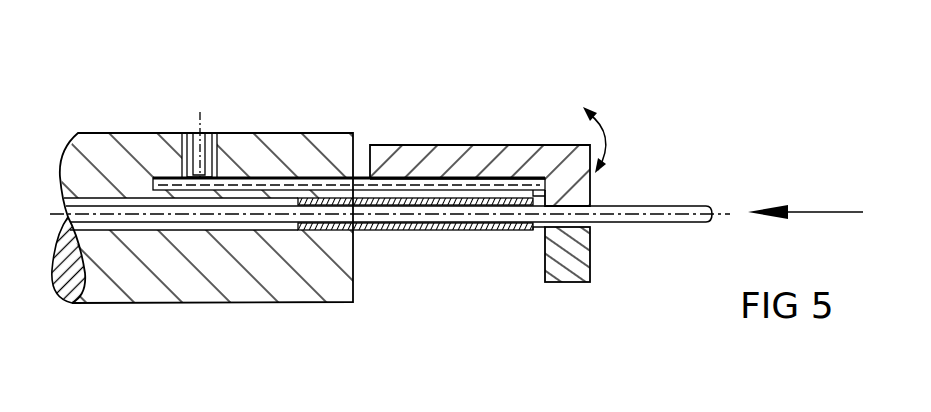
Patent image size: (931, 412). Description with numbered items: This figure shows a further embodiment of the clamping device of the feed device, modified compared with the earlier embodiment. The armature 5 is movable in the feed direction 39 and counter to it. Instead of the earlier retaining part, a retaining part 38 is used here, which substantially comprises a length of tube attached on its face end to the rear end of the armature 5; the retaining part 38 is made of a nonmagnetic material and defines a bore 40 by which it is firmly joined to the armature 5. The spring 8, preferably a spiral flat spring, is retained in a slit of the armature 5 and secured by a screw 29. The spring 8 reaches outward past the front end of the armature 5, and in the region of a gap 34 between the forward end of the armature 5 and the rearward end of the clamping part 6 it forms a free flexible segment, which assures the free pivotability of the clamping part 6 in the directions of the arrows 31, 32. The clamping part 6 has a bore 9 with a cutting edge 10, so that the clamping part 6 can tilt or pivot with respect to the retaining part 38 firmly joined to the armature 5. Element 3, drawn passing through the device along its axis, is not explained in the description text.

The cable 3 is at (650, 222).
The armature 5 is at (271, 152).
The clamping part 6 is at (512, 160).
The spring 8 is at (438, 185).
The bore 9 is at (585, 192).
The cutting edge 10 is at (538, 237).
The screw 29 is at (210, 137).
The arrow 31 is at (603, 125).
The arrow 32 is at (608, 156).
The gap 34 is at (360, 160).
The retaining part 38 is at (440, 230).
The feed direction 39 is at (815, 212).
The bore 40 is at (495, 230).